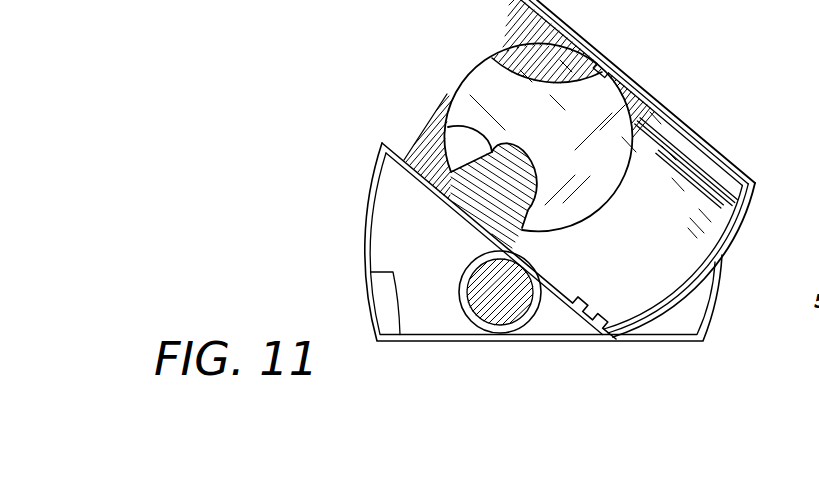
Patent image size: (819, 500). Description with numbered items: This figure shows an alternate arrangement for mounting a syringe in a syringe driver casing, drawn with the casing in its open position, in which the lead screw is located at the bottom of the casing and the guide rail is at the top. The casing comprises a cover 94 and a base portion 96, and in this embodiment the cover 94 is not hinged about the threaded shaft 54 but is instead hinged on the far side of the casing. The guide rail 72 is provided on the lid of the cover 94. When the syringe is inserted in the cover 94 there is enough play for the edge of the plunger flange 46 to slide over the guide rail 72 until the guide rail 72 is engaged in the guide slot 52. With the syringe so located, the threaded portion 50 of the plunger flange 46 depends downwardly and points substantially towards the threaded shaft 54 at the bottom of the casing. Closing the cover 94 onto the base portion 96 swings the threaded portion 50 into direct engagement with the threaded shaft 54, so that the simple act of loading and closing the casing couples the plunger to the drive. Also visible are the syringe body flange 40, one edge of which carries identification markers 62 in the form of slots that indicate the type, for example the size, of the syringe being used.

The syringe body flange 40 is at (697, 170).
The plunger flange 46 is at (450, 93).
The threaded portion 50 is at (447, 125).
The guide slot 52 is at (490, 57).
The threaded shaft 54 is at (502, 307).
The identification markers 62 is at (598, 317).
The guide rail 72 is at (606, 62).
The cover 94 is at (655, 100).
The base portion 96 is at (368, 186).